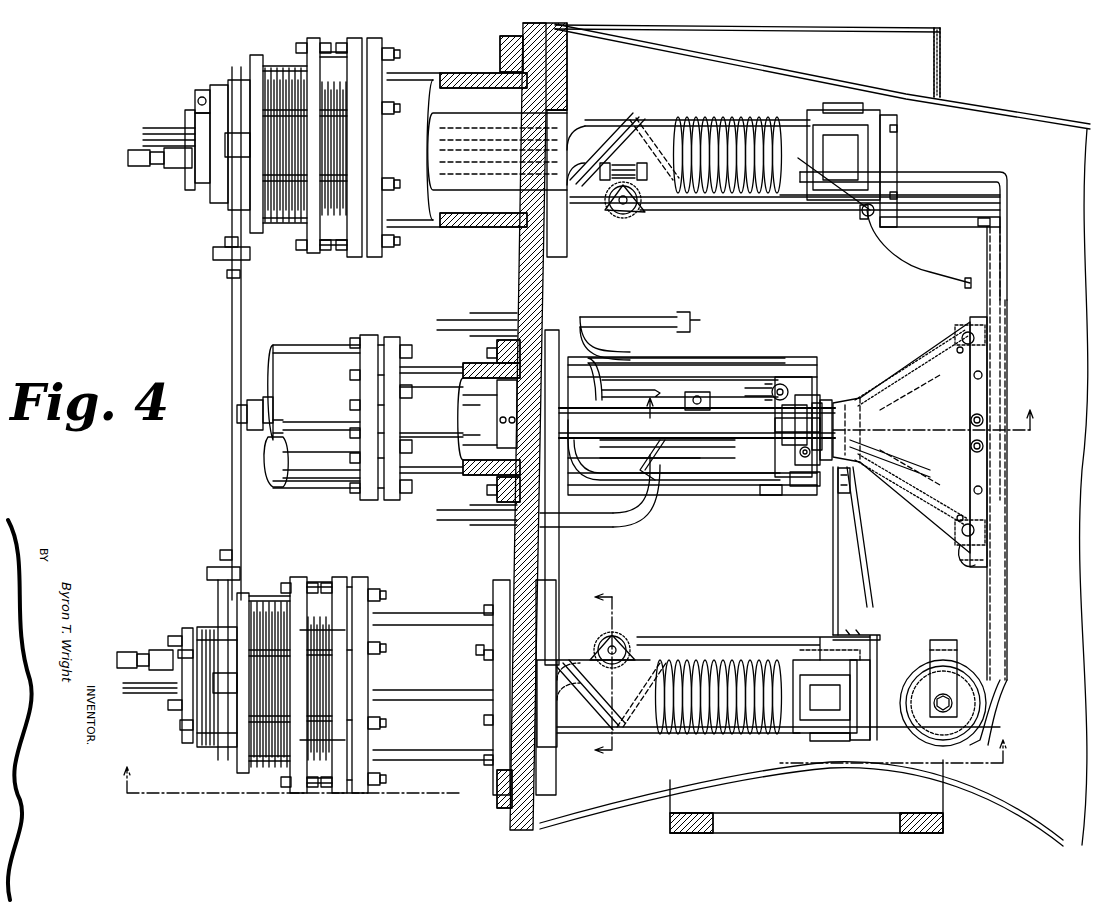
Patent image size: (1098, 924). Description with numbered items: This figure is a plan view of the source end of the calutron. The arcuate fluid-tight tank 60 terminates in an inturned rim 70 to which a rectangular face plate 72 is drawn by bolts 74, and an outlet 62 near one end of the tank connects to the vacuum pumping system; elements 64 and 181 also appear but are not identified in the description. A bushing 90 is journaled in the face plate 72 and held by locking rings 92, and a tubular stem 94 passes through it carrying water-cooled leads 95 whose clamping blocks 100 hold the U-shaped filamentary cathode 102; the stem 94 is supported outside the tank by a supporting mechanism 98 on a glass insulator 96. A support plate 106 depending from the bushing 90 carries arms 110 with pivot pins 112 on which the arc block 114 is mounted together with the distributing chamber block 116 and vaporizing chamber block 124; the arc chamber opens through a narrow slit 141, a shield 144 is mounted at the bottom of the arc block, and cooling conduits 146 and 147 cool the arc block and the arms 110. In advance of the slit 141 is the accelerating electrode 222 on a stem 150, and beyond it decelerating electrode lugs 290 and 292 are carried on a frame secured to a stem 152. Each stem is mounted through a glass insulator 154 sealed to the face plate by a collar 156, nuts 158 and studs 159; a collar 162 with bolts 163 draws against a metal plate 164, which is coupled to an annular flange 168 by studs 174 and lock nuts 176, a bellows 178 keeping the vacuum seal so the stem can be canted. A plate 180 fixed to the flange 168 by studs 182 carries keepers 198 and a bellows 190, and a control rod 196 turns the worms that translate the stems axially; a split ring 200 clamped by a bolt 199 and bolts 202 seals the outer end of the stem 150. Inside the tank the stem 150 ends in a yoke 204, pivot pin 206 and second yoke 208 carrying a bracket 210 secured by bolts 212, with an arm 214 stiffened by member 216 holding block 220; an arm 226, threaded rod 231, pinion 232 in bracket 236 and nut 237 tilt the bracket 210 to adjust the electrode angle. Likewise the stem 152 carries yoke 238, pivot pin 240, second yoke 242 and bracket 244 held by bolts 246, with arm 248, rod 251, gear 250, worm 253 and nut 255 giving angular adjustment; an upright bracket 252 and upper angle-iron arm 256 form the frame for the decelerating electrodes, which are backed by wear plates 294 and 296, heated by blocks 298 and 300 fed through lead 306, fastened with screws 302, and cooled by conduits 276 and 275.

The tank 60 is at (1050, 120).
The outlet 62 is at (942, 50).
The base plate 64 is at (668, 816).
The inturned flange or rim 70 is at (567, 50).
The face plate 72 is at (566, 84).
The bolts 74 is at (520, 44).
The sleeve or bushing 90 is at (560, 480).
The locking rings 92 is at (508, 393).
The tubular stem member 94 is at (255, 435).
The water cooled leads 95 is at (240, 385).
The glass insulator 96 is at (420, 335).
The supporting mechanism 98 is at (337, 331).
The clamping blocks 100 is at (790, 395).
The filamentary cathode 102 is at (805, 400).
The support plate 106 is at (598, 490).
The arm 110 is at (722, 355).
The pivot pin 112 is at (786, 355).
The arc block 114 is at (810, 490).
The distributing chamber block 116 is at (770, 500).
The vaporizing chamber block 124 is at (700, 480).
The slit 141 is at (830, 395).
The shield 144 is at (838, 400).
The conduit 146 is at (670, 398).
The conduit 147 is at (660, 498).
The stem 150 is at (630, 735).
The stem 152 is at (662, 118).
The glass insulator 154 is at (420, 612).
The collar 156 is at (500, 595).
The nuts 158 is at (490, 612).
The studs 159 is at (485, 650).
The collar 162 is at (340, 582).
The bolts 163 is at (385, 592).
The metal plate 164 is at (357, 590).
The annular flange 168 is at (312, 590).
The studs 174 is at (278, 600).
The lock nuts 176 is at (330, 592).
The bellows 178 is at (330, 630).
The metal plate 180 is at (248, 600).
The plate 181 is at (965, 390).
The studs 182 is at (270, 770).
The bellows 190 is at (270, 618).
The control rod 196 is at (228, 308).
The keepers 198 is at (212, 640).
The bolt 199 is at (192, 735).
The split ring 200 is at (182, 620).
The bolts 202 is at (170, 638).
The yoke 204 is at (800, 735).
The pivot pin 206 is at (828, 738).
The second yoke 208 is at (860, 740).
The bracket 210 is at (880, 628).
The bolts 212 is at (875, 640).
The arm 214 is at (833, 580).
The stiffening member 216 is at (860, 570).
The block 220 is at (857, 475).
The accelerating electrode 222 is at (852, 405).
The arm 226 is at (805, 628).
The threaded rod 231 is at (612, 640).
The pinion 232 is at (630, 650).
The bracket 236 is at (590, 655).
The nut 237 is at (130, 652).
The yoke 238 is at (820, 118).
The pivot pin 240 is at (850, 105).
The second yoke 242 is at (882, 108).
The bracket 244 is at (922, 152).
The bolts 246 is at (898, 128).
The arm 248 is at (742, 218).
The gear 250 is at (636, 212).
The rod 251 is at (623, 215).
The upright bracket 252 is at (990, 226).
The worm 253 is at (608, 205).
The nut 255 is at (140, 170).
The upper angle iron arm 256 is at (1005, 268).
The conduit 275 is at (748, 658).
The conduit 276 is at (163, 128).
The lug 290 is at (838, 437).
The lug 292 is at (890, 458).
The wear plate 294 is at (900, 375).
The wear plate 296 is at (925, 505).
The metal block 298 is at (958, 338).
The block 300 is at (960, 530).
The screws 302 is at (985, 452).
The lead 306 is at (920, 270).